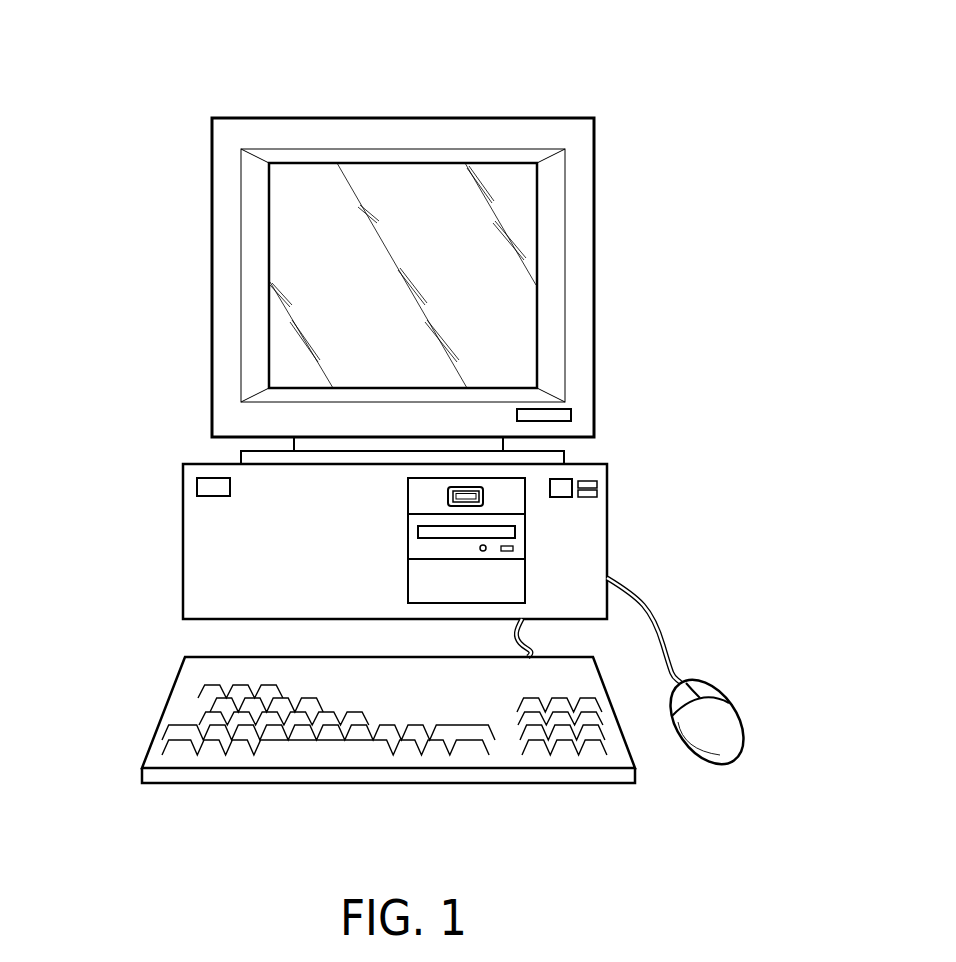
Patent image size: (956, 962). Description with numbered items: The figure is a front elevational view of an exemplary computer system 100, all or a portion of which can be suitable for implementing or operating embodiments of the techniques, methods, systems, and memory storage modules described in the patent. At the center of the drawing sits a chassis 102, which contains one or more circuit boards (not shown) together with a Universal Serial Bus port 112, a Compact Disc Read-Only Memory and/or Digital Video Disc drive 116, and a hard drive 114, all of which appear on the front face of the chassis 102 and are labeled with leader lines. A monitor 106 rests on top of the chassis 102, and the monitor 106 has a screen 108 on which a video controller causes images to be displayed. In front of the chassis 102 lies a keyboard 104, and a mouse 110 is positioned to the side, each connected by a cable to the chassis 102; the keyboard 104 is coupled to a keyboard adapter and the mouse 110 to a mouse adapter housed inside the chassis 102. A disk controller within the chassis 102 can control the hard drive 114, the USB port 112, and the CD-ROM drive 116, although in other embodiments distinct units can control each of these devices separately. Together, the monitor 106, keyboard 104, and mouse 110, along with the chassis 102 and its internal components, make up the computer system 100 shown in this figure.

The computer system 100 is at (583, 96).
The chassis 102 is at (183, 543).
The keyboard 104 is at (165, 703).
The monitor 106 is at (288, 118).
The screen 108 is at (317, 282).
The mouse 110 is at (725, 712).
The Universal Serial Bus (USB) port 112 is at (487, 493).
The hard drive 114 is at (517, 580).
The CD-ROM and/or DVD drive 116 is at (517, 536).